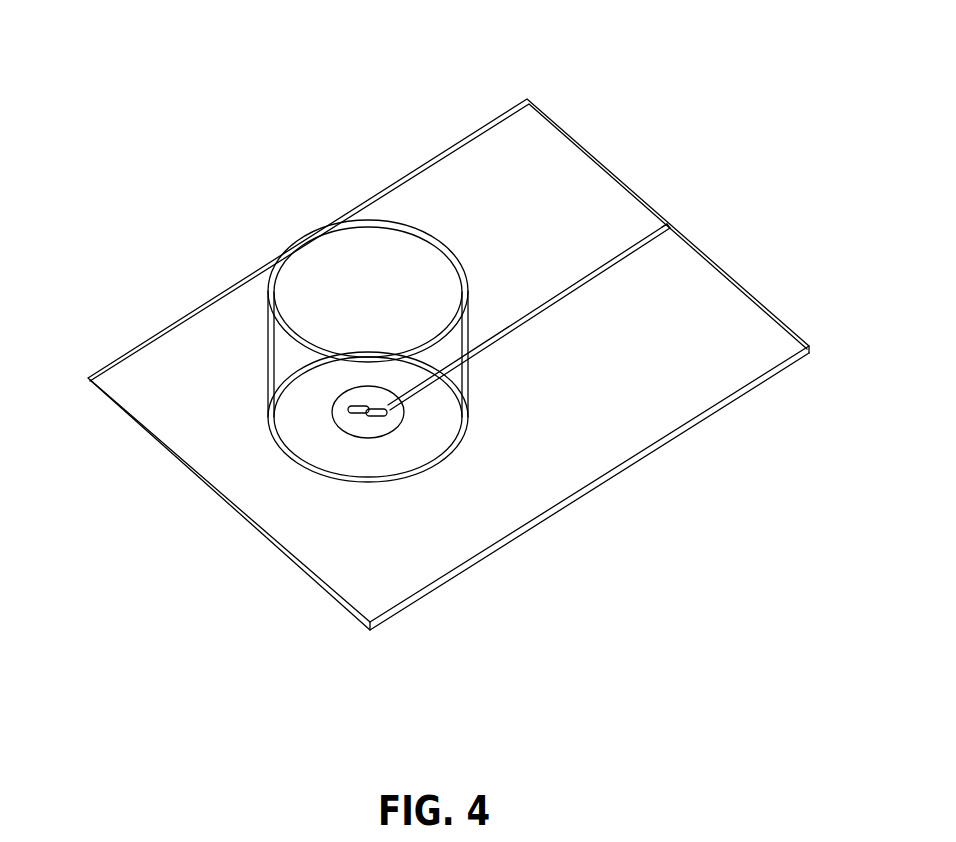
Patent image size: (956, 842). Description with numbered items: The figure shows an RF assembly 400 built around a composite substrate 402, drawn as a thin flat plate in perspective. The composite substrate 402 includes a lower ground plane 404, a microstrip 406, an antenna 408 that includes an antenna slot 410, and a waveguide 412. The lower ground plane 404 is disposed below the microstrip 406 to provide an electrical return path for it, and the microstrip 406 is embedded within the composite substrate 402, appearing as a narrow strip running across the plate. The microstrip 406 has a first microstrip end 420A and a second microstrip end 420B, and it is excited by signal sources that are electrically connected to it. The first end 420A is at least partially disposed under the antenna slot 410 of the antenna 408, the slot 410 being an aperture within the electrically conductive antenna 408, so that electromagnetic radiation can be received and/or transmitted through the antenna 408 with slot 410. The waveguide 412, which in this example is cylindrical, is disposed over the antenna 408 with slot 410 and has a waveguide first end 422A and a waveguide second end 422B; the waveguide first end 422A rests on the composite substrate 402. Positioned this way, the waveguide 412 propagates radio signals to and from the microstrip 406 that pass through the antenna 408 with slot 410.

The RF assembly 400 is at (192, 72).
The composite substrate 402 is at (586, 184).
The lower ground plane 404 is at (647, 453).
The microstrip 406 is at (557, 288).
The antenna 408 is at (380, 424).
The antenna slot 410 is at (358, 406).
The waveguide 412 is at (273, 350).
The first microstrip end 420A is at (366, 412).
The second microstrip end 420B is at (670, 224).
The waveguide first end 422A is at (281, 448).
The waveguide second end 422B is at (385, 220).